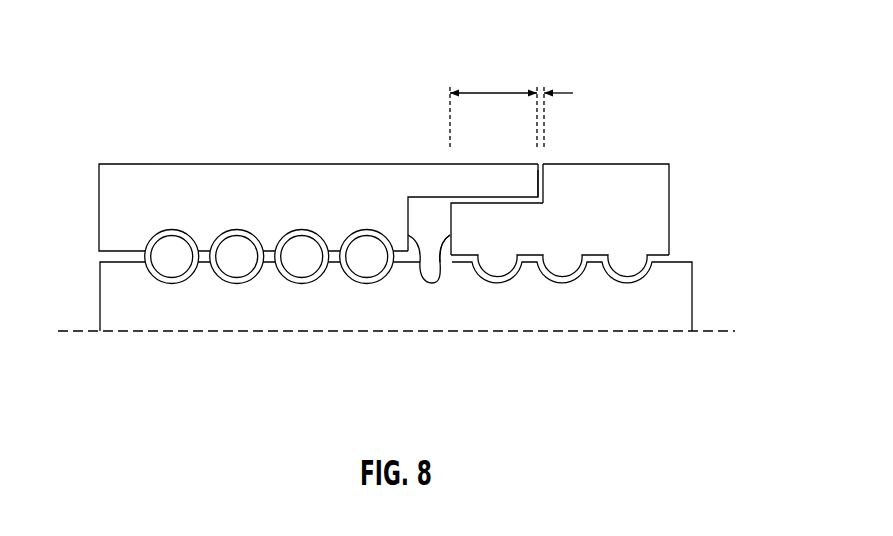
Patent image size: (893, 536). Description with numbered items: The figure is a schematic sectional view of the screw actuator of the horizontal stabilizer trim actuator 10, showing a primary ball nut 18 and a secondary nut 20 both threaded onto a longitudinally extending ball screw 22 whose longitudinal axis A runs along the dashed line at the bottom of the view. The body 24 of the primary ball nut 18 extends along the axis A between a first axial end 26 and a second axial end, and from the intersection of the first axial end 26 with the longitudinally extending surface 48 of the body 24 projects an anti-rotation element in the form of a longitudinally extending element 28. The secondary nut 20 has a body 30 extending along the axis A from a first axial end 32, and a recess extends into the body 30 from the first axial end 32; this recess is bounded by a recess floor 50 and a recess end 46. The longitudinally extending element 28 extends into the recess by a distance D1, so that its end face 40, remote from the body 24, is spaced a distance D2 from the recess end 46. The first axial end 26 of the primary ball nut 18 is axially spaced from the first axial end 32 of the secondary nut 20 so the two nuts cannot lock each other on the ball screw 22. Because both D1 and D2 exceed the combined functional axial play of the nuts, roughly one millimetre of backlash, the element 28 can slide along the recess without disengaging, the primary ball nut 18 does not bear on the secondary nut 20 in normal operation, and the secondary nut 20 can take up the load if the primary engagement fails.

The horizontal stabilizer trim actuator 10 is at (703, 33).
The primary ball nut 18 is at (270, 160).
The secondary nut 20 is at (682, 180).
The ball screw 22 is at (258, 320).
The body 24 is at (130, 180).
The first axial end 26 is at (421, 270).
The longitudinally extending element 28 is at (435, 172).
The body 30 is at (657, 208).
The first axial end 32 is at (437, 265).
The end face 40 is at (537, 184).
The recess end 46 is at (547, 190).
The longitudinally extending surface 48 is at (355, 163).
The recess floor 50 is at (478, 204).
The longitudinal axis A is at (83, 332).
The distance D1 is at (477, 92).
The distance D2 is at (563, 92).